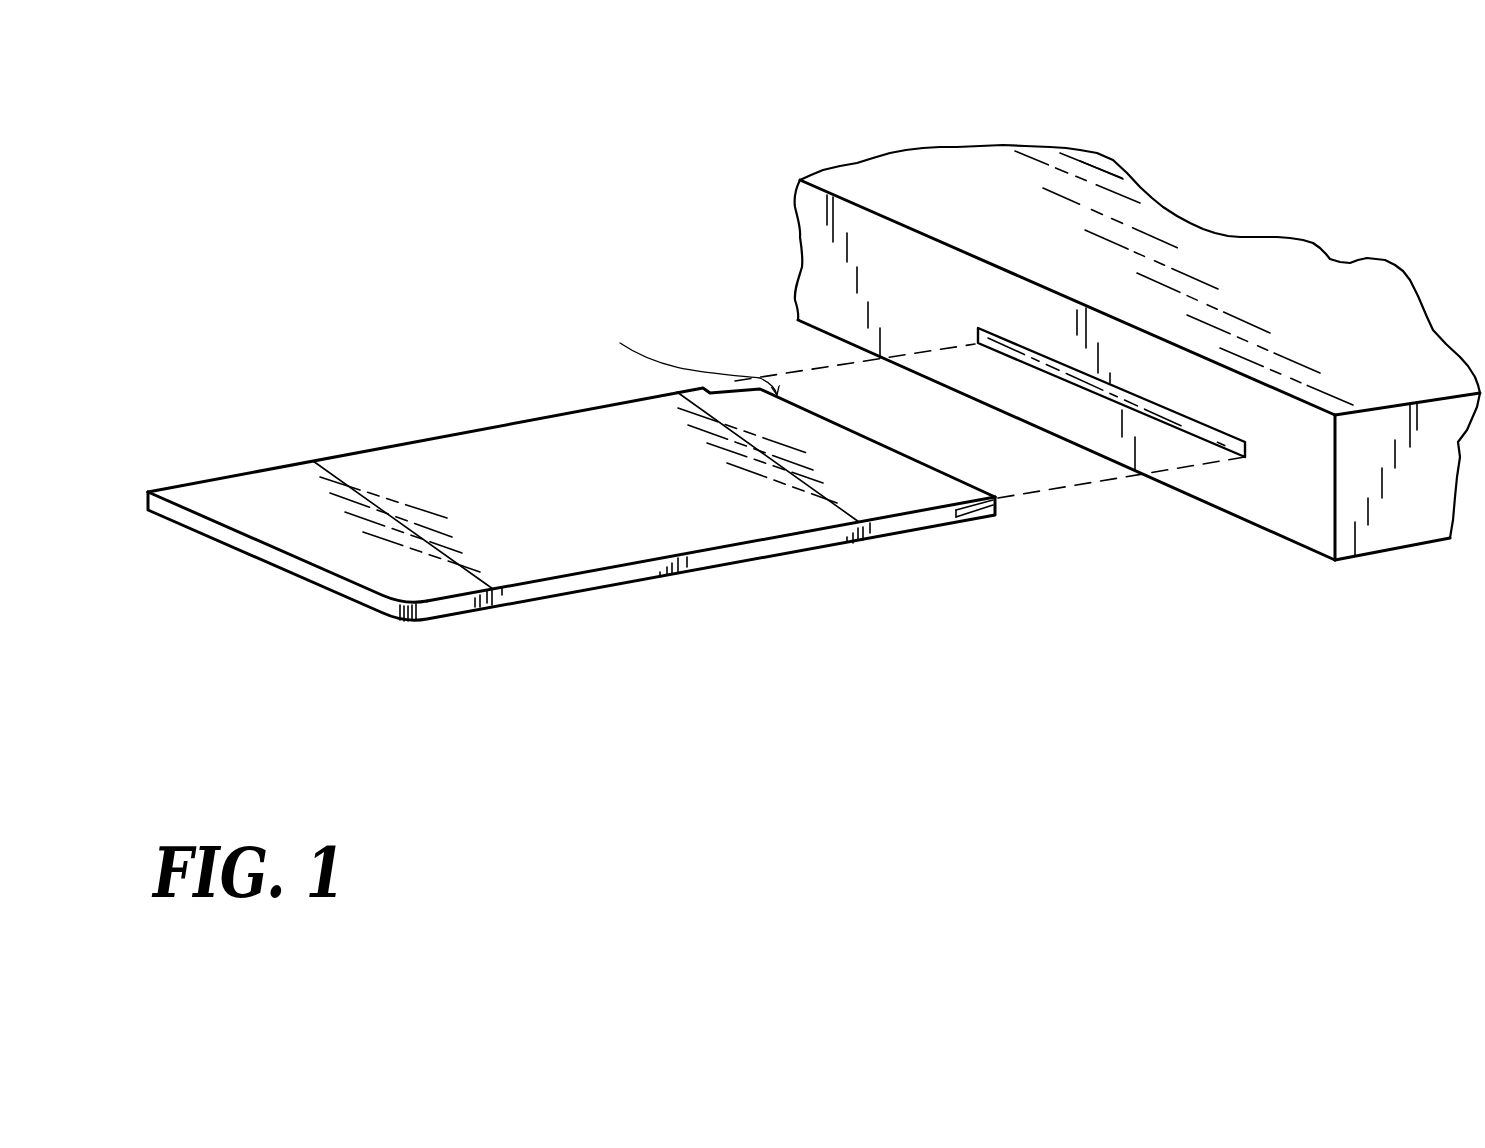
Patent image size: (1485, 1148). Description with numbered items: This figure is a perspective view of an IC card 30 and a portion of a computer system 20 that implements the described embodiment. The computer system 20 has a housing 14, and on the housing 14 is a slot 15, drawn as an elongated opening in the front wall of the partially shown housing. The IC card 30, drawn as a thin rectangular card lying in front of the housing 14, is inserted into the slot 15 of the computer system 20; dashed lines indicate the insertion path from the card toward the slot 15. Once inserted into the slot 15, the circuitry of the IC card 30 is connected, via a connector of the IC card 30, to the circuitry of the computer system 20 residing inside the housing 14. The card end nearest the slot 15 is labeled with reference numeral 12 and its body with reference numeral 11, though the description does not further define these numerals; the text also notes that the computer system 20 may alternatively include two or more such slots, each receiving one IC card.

The computer system 20 is at (1285, 177).
The housing 14 is at (813, 255).
The slot 15 is at (1057, 382).
The IC card 30 is at (539, 567).
The IC card body 11 is at (563, 588).
The connector end of IC card 12 is at (958, 473).